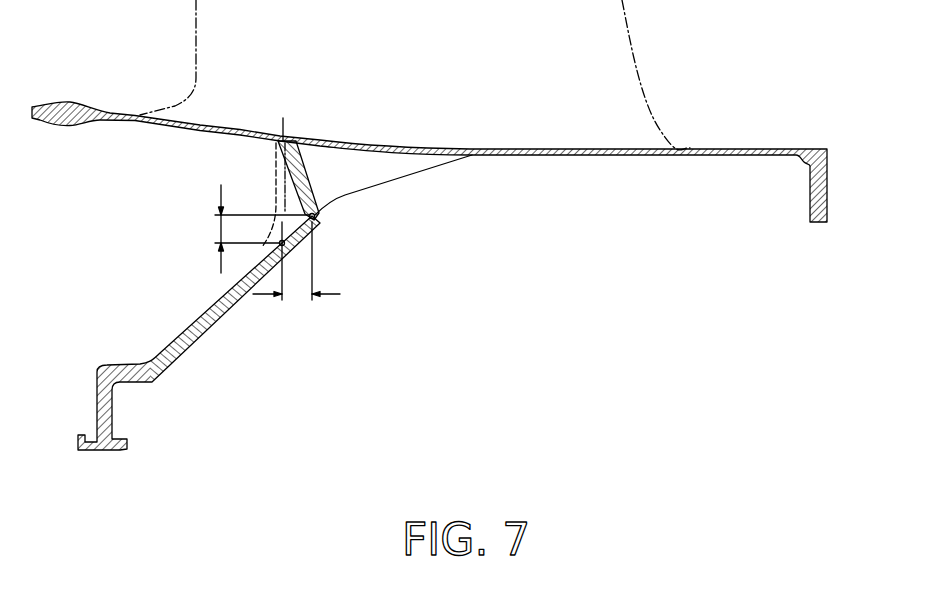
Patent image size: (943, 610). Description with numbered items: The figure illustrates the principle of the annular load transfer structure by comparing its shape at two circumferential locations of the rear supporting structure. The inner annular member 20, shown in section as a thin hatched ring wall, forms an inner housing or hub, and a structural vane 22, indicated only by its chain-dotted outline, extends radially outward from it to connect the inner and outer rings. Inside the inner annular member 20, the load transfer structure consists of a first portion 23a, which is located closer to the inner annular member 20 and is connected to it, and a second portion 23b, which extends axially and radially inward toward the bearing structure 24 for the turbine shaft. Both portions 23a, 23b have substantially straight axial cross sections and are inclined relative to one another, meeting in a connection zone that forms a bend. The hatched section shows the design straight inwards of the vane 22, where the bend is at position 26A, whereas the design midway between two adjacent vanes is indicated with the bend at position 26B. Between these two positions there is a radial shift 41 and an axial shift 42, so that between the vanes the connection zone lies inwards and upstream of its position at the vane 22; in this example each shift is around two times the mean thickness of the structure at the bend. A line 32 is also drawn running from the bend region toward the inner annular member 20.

The inner annular member 20 is at (764, 148).
The structural vane 22 is at (580, 60).
The first portion 23a is at (293, 187).
The second portion 23b is at (200, 313).
The bearing structure 24 is at (97, 407).
The connection zone position at a vane 26A is at (317, 219).
The connection zone position between vanes 26B is at (285, 249).
The link 32 is at (367, 170).
The radial shift 41 is at (220, 230).
The axial shift 42 is at (300, 296).